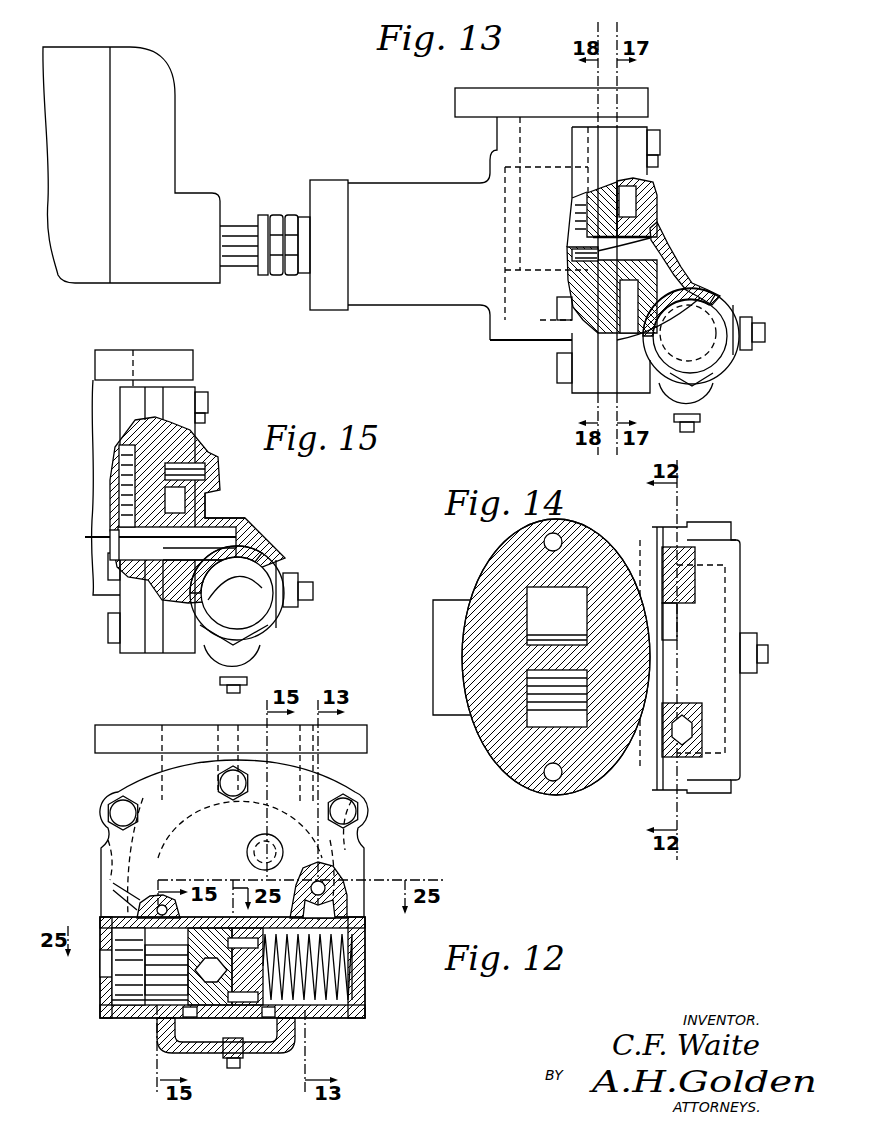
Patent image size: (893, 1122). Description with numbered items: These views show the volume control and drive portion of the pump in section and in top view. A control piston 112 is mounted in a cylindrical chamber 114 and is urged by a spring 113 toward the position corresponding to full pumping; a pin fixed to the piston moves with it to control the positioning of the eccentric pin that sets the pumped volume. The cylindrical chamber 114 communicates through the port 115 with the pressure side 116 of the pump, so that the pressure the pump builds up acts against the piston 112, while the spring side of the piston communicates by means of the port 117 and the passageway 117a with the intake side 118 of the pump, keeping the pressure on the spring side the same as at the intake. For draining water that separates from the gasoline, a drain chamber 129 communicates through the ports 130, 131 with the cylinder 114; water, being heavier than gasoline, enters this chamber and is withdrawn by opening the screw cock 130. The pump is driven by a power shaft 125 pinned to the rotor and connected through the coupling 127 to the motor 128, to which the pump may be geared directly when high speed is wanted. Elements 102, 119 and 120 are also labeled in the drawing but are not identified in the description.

In FIG. 13, the cylinder 102 is at (387, 195).
In FIG. 14, the cylinder 102 is at (440, 630).
In FIG. 15, the control piston 112 is at (240, 556).
In FIG. 12, the control piston 112 is at (145, 1022).
In FIG. 13, the spring 113 is at (698, 308).
In FIG. 12, the spring 113 is at (350, 1000).
In FIG. 13, the cylindrical chamber 114 is at (702, 292).
In FIG. 15, the cylindrical chamber 114 is at (270, 572).
In FIG. 14, the cylindrical chamber 114 is at (718, 528).
In FIG. 12, the cylindrical chamber 114 is at (115, 992).
In FIG. 15, the port 115 is at (215, 532).
In FIG. 12, the port 115 is at (113, 886).
In FIG. 15, the pressure side 116 is at (118, 537).
In FIG. 14, the pressure side 116 is at (530, 722).
In FIG. 12, the pressure side 116 is at (108, 840).
In FIG. 12, the port 117 is at (160, 973).
In FIG. 13, the passageway 117a is at (675, 262).
In FIG. 12, the passageway 117a is at (347, 925).
In FIG. 13, the intake side 118 is at (522, 140).
In FIG. 14, the intake side 118 is at (565, 590).
In FIG. 12, the intake side 118 is at (352, 800).
In FIG. 15, the port 119 is at (210, 467).
In FIG. 12, the port 119 is at (250, 848).
In FIG. 15, the passage 120 is at (212, 500).
In FIG. 13, the power shaft 125 is at (240, 262).
In FIG. 13, the coupling 127 is at (287, 277).
In FIG. 13, the motor 128 is at (197, 197).
In FIG. 12, the drain chamber 129 is at (213, 1037).
In FIG. 13, the screw cock 130 is at (700, 427).
In FIG. 15, the screw cock 130 is at (225, 680).
In FIG. 12, the screw cock 130 is at (243, 1068).
In FIG. 12, the port 131 is at (158, 1028).